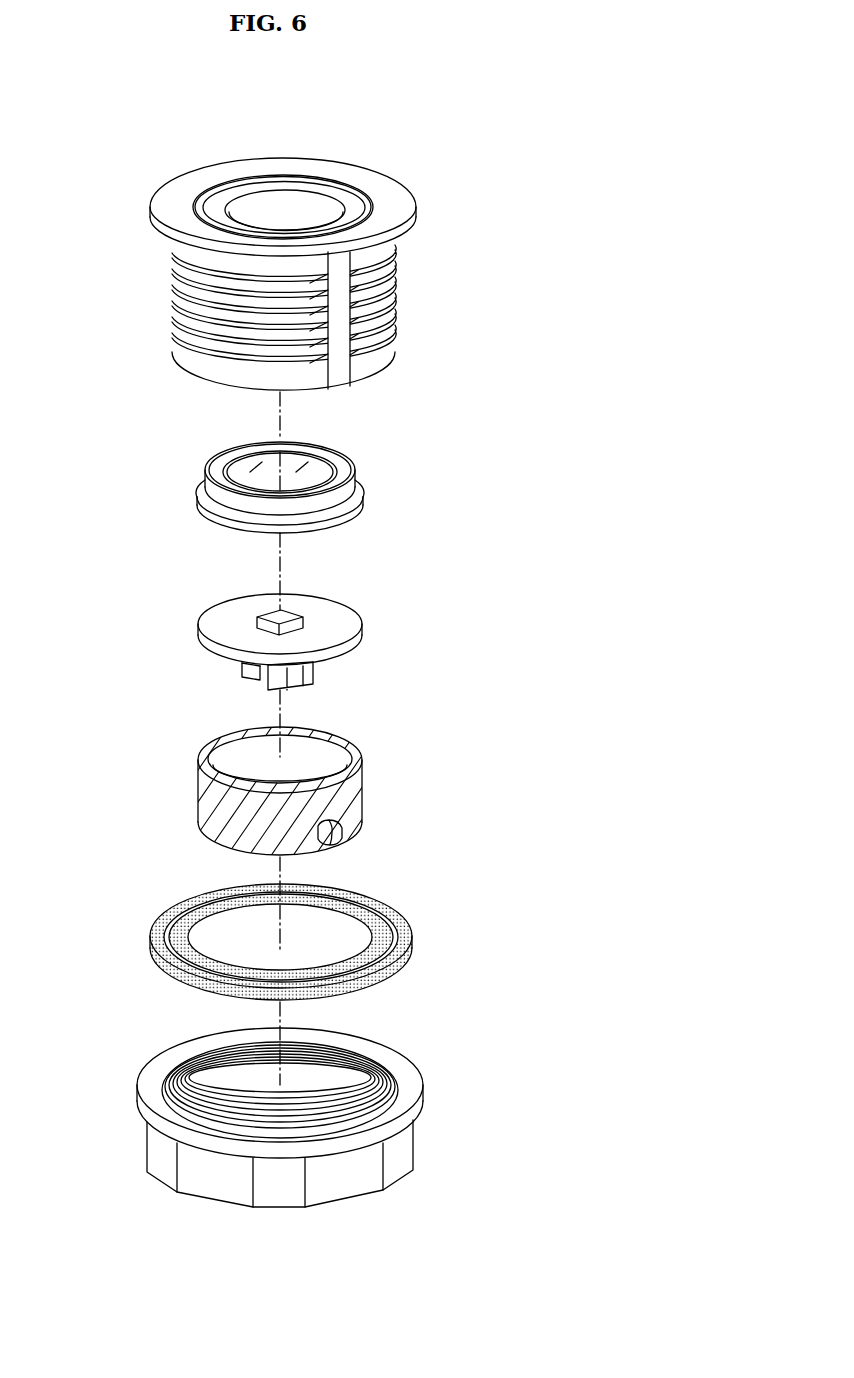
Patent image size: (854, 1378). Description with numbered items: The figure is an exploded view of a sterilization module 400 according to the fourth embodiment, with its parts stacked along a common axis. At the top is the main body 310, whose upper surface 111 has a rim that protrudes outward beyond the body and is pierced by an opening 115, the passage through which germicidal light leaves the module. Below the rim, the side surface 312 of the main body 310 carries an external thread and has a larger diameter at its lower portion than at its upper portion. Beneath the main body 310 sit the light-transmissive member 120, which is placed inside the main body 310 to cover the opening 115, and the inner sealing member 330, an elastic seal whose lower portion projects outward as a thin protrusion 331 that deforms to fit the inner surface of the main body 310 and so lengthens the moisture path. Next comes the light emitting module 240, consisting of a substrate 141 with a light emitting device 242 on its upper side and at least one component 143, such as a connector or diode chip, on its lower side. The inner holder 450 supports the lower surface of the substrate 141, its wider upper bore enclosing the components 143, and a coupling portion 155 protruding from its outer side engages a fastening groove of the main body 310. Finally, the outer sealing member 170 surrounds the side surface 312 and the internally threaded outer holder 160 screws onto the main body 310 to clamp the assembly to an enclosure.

The sterilization module 400 is at (114, 140).
The main body 310 is at (132, 281).
The upper surface 111 is at (392, 204).
The opening 115 is at (290, 212).
The side surface 312 is at (395, 294).
The light-transmissive member 120 is at (303, 457).
The inner sealing member 330 is at (350, 497).
The protrusion 331 is at (348, 513).
The light emitting module 240 is at (436, 599).
The light emitting device 242 is at (290, 613).
The substrate 141 is at (350, 630).
The component 143 is at (330, 670).
The inner holder 450 is at (347, 788).
The coupling portion 155 is at (340, 828).
The outer sealing member 170 is at (410, 942).
The outer holder 160 is at (400, 1152).